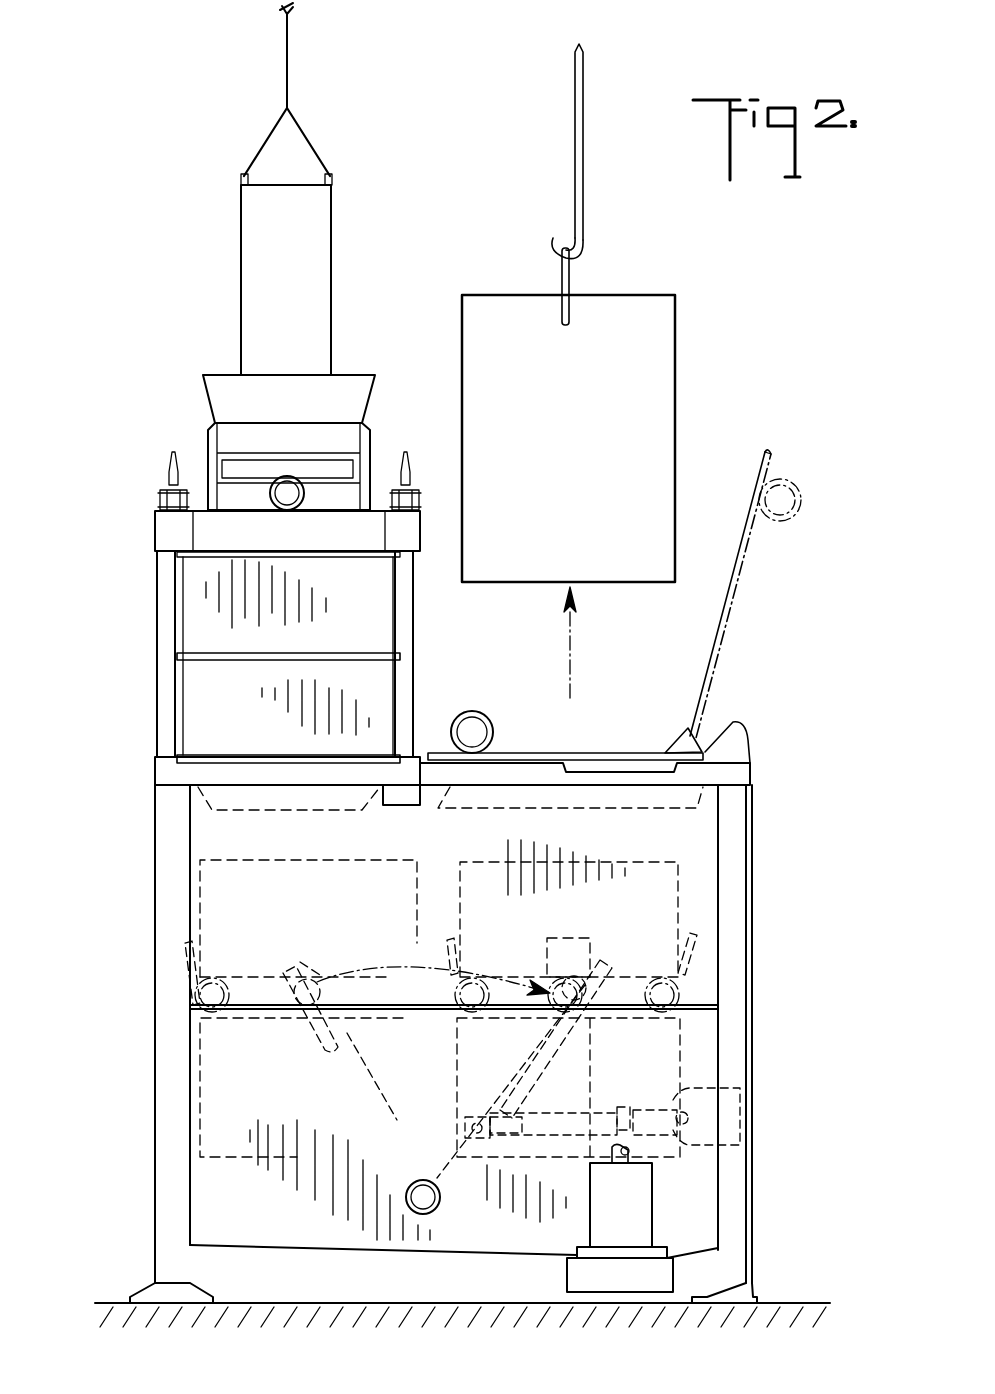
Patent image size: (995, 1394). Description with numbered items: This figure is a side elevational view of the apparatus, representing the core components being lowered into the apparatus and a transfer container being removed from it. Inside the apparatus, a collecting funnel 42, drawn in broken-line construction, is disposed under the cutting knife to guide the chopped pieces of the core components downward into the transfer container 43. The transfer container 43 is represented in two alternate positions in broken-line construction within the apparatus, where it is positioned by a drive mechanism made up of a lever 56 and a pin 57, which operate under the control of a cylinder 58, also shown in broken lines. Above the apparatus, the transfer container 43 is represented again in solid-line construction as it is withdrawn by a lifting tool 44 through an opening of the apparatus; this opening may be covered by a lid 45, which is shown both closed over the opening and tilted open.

The collecting funnel 42 is at (315, 815).
The transfer container 43 is at (672, 370).
The lifting tool 44 is at (582, 245).
The lid 45 is at (611, 751).
The lever 56 is at (345, 1091).
The pin 57 is at (313, 982).
The cylinder 58 is at (603, 1107).